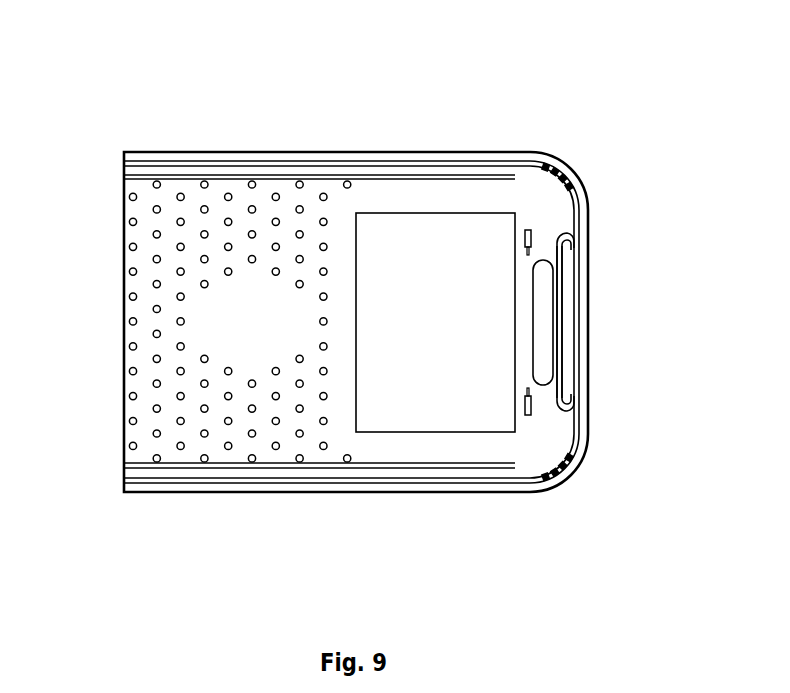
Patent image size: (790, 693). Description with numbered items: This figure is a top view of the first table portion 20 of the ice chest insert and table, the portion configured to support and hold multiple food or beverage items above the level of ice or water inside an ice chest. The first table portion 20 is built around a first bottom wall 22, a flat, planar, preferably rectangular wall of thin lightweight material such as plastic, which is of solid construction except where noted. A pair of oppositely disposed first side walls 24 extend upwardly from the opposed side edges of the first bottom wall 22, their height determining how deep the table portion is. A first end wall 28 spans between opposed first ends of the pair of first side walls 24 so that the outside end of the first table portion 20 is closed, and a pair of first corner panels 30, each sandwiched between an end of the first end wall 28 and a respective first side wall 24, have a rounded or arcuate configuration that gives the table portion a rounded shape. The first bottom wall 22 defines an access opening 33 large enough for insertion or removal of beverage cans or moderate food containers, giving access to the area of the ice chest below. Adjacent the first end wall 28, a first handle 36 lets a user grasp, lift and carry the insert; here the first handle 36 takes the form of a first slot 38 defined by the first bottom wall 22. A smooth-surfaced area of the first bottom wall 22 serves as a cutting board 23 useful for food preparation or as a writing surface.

The first table portion 20 is at (439, 75).
The first bottom wall 22 is at (175, 233).
The cutting board 23 is at (222, 310).
The first side walls 24 is at (205, 152).
The first end wall 28 is at (580, 423).
The first corner panels 30 is at (567, 173).
The access opening 33 is at (470, 212).
The first handle 36 is at (595, 296).
The first slot 38 is at (540, 322).